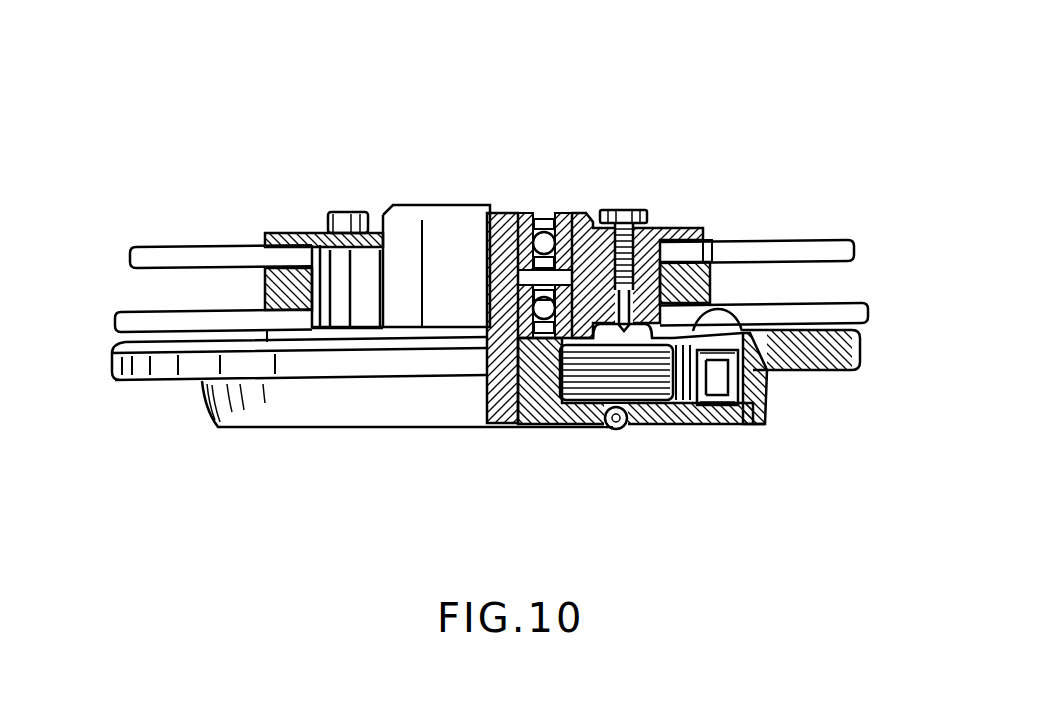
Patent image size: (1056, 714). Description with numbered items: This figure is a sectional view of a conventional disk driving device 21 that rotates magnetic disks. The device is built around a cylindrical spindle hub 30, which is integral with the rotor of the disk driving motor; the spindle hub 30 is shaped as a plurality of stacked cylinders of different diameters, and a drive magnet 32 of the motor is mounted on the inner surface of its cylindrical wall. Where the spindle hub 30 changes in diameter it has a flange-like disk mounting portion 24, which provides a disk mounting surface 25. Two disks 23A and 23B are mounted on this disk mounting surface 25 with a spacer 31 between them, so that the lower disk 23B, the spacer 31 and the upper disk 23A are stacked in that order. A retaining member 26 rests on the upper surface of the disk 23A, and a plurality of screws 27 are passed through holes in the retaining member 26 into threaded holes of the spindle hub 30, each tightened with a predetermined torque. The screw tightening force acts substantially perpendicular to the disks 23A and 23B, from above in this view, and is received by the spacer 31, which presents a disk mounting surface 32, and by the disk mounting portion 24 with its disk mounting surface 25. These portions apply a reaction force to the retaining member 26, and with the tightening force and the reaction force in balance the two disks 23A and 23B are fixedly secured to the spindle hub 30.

The drive unit assembly 21 is at (764, 108).
The disk 23A is at (812, 248).
The disk 23B is at (858, 310).
The disk mounting portion 24 is at (670, 400).
The disk mounting surface 25 is at (758, 408).
The retaining member 26 is at (704, 226).
The screw 27 is at (621, 210).
The spindle hub 30 is at (430, 228).
The spacer 31 is at (712, 283).
The drive magnet 32 is at (705, 243).